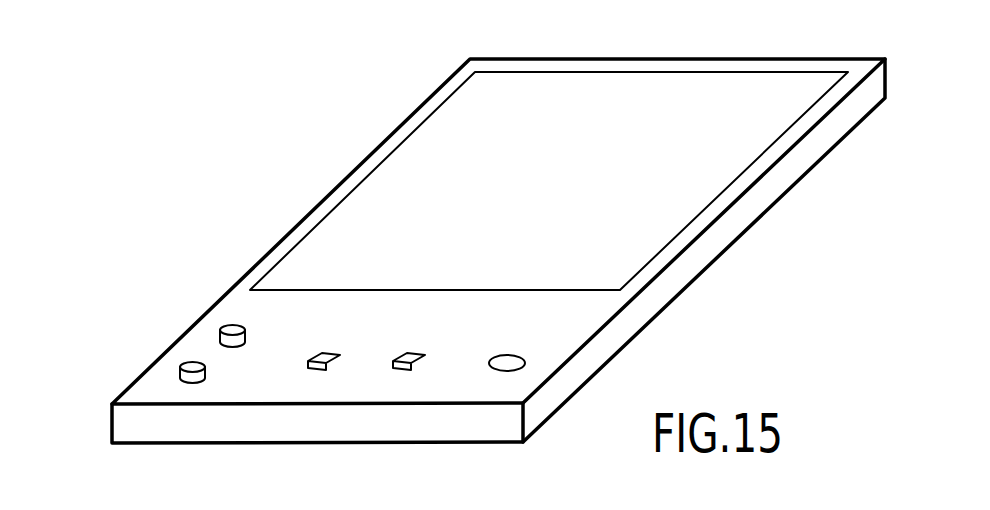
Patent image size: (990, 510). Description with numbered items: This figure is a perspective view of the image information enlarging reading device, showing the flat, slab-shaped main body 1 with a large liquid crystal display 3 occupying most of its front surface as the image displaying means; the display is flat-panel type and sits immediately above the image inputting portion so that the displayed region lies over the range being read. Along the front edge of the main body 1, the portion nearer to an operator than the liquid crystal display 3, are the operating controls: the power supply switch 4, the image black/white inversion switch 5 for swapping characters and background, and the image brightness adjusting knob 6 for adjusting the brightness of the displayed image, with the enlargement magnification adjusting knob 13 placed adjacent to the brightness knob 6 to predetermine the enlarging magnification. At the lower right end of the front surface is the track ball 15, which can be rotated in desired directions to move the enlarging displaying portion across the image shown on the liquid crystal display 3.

The main body 1 is at (857, 62).
The liquid crystal display 3 is at (660, 243).
The enlargement magnification adjusting knob 13 is at (183, 363).
The image brightness adjusting knob 6 is at (224, 326).
The image black/white inversion switch 5 is at (330, 352).
The power supply switch 4 is at (415, 352).
The track ball 15 is at (506, 354).